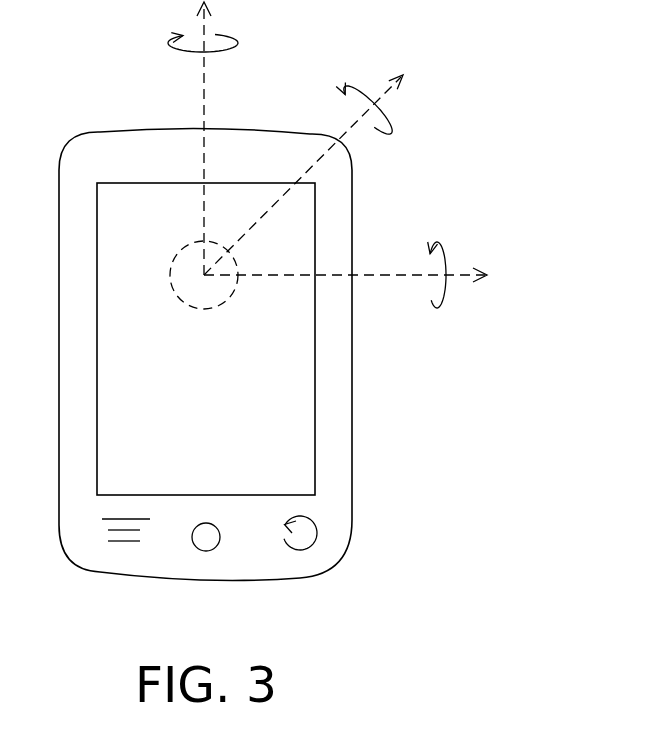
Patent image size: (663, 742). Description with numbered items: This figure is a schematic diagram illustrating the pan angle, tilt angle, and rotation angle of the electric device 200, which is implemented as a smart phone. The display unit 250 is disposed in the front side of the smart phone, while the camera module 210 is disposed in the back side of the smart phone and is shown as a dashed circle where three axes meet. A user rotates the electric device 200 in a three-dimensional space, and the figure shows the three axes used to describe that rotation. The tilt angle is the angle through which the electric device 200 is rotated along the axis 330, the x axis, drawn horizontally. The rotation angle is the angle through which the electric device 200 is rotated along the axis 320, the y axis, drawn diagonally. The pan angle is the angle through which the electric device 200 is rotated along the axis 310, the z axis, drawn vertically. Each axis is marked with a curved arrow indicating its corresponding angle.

The electric device 200 is at (352, 453).
The display unit 250 is at (316, 382).
The camera module 210 is at (170, 271).
The axis 310 is at (203, 90).
The axis 320 is at (343, 127).
The axis 330 is at (388, 272).